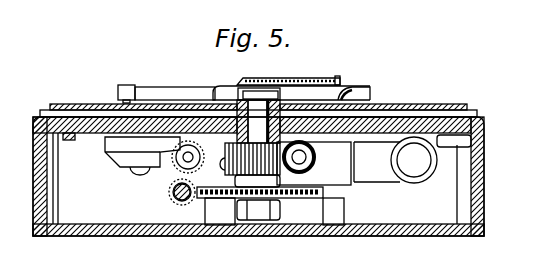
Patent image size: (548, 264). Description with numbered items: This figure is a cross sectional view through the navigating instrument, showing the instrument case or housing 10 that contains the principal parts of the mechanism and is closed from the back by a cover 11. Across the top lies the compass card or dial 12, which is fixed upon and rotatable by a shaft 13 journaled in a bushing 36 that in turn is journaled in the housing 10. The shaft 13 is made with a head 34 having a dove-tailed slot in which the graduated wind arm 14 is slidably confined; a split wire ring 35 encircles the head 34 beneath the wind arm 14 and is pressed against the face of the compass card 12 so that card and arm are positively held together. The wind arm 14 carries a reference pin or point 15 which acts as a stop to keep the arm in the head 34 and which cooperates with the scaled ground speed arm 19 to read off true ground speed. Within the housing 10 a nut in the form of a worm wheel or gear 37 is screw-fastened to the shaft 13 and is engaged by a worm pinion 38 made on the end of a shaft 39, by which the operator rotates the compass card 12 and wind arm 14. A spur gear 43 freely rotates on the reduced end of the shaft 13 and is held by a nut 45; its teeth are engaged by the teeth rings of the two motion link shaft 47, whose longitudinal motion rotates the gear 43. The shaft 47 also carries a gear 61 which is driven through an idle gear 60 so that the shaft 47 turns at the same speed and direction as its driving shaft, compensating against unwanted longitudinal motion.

The instrument case or housing 10 is at (483, 148).
The cover 11 is at (433, 231).
The compass card or dial 12 is at (420, 106).
The shaft 13 is at (250, 143).
The graduated wind arm 14 is at (168, 89).
The reference pin or point 15 is at (340, 79).
The ground speed arm 19 is at (281, 87).
The head 34 is at (254, 90).
The split wire ring 35 is at (216, 93).
The bushing 36 is at (304, 86).
The worm wheel or gear 37 is at (230, 177).
The worm pinion 38 is at (318, 150).
The shaft 39 is at (359, 165).
The spur gear 43 is at (303, 195).
The nut 45 is at (258, 221).
The two motion link shaft 47 is at (176, 207).
The idle gear 60 is at (157, 171).
The gear 61 is at (168, 195).